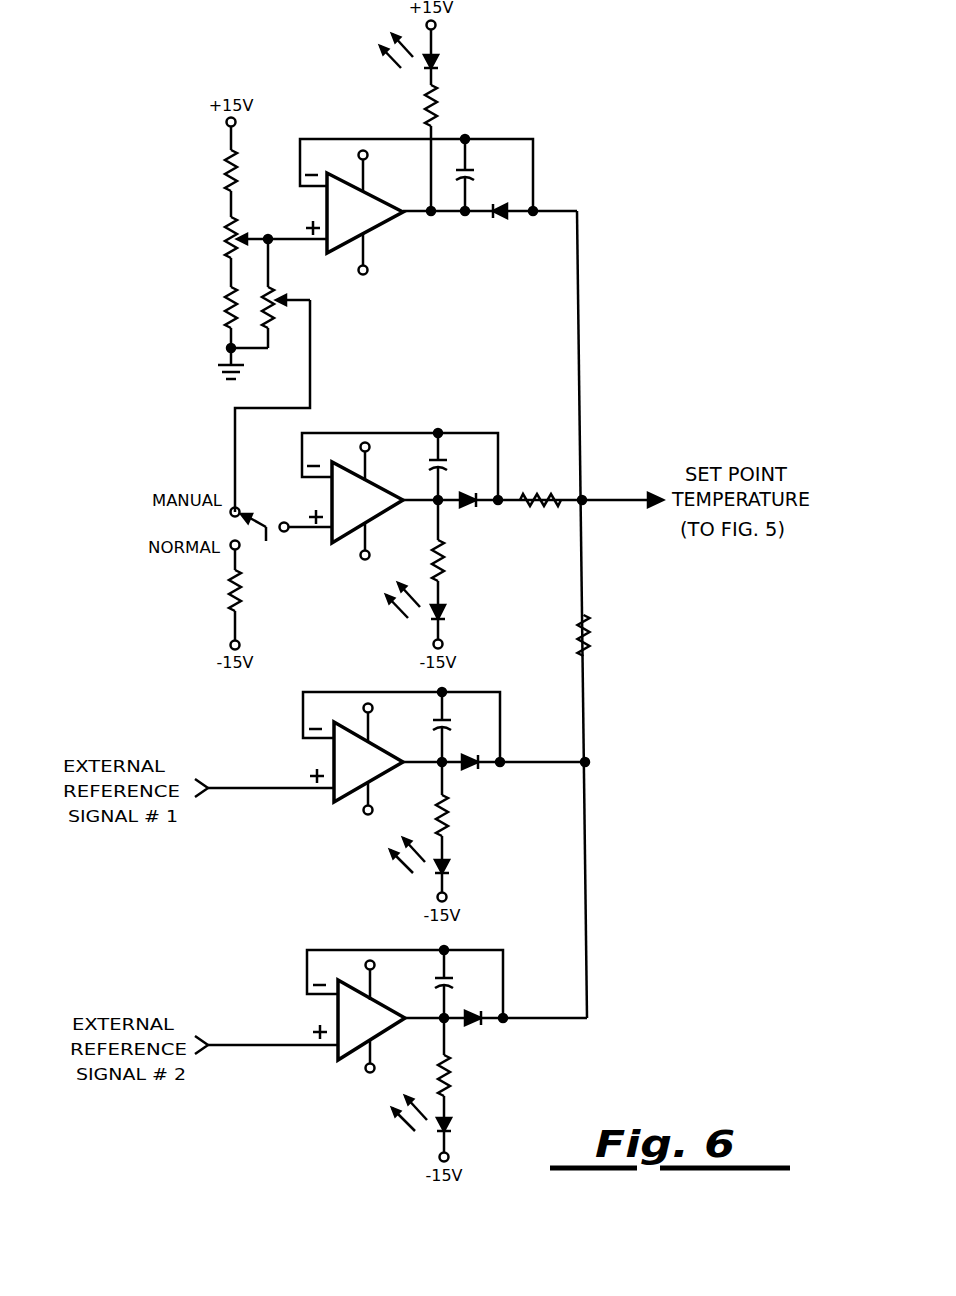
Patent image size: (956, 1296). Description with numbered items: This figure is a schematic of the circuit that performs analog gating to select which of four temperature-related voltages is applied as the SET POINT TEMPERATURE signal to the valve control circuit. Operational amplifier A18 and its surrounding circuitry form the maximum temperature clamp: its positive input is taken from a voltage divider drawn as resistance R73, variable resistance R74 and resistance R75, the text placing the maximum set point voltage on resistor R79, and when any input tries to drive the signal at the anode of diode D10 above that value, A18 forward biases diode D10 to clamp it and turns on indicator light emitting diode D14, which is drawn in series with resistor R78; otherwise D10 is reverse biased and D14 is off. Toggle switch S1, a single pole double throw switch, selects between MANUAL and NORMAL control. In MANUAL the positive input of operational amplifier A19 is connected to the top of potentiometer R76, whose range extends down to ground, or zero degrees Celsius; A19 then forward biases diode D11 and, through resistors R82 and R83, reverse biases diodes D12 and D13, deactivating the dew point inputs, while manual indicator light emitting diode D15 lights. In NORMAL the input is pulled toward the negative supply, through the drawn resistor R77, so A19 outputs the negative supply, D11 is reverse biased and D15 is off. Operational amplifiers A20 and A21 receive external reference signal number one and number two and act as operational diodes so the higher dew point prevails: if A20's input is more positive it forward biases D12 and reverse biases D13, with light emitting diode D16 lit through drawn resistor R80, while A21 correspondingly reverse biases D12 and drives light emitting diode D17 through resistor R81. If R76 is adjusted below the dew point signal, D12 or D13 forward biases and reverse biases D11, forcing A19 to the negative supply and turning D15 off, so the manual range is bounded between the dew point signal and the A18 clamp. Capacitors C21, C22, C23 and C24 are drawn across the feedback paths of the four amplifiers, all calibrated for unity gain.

The resistance R73 is at (222, 173).
The potentiometer 1K R74 is at (221, 244).
The resistance R75 is at (221, 307).
The variable resistance (potentiometer) R76 is at (290, 292).
The resistor 1M R77 is at (226, 591).
The resistor 1.5K R78 is at (443, 103).
The variable resistance R79 is at (450, 566).
The resistor 1.5K R80 is at (454, 826).
The resistor 1.5K R81 is at (451, 1086).
The resistor R82 is at (532, 494).
The resistor R83 is at (597, 637).
The capacitor C21 is at (477, 177).
The capacitor C22 is at (445, 466).
The capacitor C23 is at (450, 727).
The capacitor C24 is at (452, 985).
The diode D10 is at (500, 218).
The diode D11 is at (472, 508).
The diode D12 is at (474, 771).
The diode D13 is at (476, 1026).
The light emitting diode D14 is at (440, 60).
The light emitting diode D15 is at (454, 612).
The light emitting diode D16 is at (458, 872).
The light emitting diode D17 is at (455, 1131).
The operational amplifier A18 is at (361, 213).
The operational amplifier A19 is at (363, 501).
The operational amplifier A20 is at (366, 759).
The operational amplifier A21 is at (369, 1017).
The toggle switch S1 is at (260, 537).